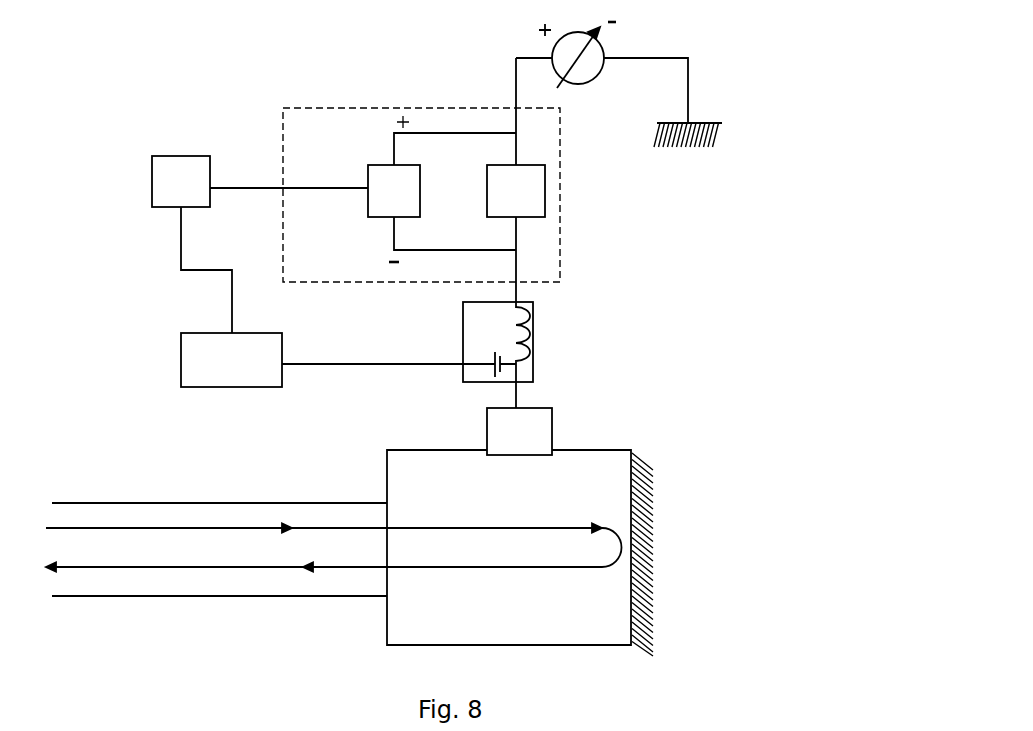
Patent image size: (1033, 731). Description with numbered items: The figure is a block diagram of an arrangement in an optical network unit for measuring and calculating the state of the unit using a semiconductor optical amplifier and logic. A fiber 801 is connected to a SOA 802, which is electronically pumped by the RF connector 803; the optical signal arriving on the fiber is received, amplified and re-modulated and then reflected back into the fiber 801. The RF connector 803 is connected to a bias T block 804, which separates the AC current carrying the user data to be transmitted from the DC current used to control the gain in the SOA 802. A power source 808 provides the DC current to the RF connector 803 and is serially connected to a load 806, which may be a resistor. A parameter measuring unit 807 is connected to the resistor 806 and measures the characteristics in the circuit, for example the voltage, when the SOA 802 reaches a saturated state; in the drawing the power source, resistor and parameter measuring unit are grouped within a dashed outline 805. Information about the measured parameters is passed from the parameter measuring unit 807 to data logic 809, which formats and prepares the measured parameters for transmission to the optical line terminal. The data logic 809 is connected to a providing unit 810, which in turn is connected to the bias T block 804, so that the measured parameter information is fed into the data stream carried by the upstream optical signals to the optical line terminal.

The fiber 801 is at (207, 596).
The SOA 802 is at (629, 452).
The RF connector 803 is at (487, 408).
The bias T block 804 is at (533, 303).
The controller 805 is at (283, 108).
The load 806 is at (545, 215).
The parameter measuring unit 807 is at (368, 216).
The power source 808 is at (573, 32).
The data logic 809 is at (152, 200).
The providing unit 810 is at (181, 352).